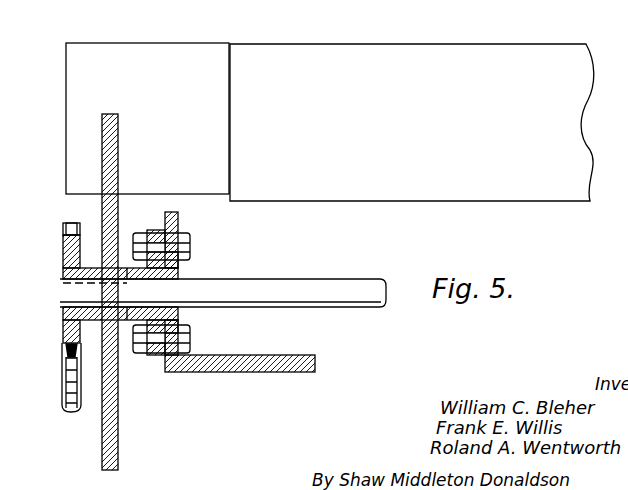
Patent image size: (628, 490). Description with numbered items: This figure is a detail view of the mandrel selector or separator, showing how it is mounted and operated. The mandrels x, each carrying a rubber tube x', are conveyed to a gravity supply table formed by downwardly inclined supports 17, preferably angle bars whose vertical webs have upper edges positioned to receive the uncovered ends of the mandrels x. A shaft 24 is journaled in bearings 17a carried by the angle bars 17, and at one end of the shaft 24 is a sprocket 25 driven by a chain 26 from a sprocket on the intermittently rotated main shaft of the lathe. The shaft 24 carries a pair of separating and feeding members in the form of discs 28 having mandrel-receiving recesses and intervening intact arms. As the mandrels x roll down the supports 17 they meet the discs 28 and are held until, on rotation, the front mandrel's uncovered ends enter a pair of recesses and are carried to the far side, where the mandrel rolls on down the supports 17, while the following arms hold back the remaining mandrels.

The downwardly inclined supports 17 is at (178, 226).
The bearings 17a is at (155, 355).
The shaft 24 is at (278, 289).
The sprocket 25 is at (63, 256).
The chain 26 is at (72, 375).
The discs 28 is at (118, 435).
The mandrels x is at (147, 118).
The rubber tube x' is at (412, 106).